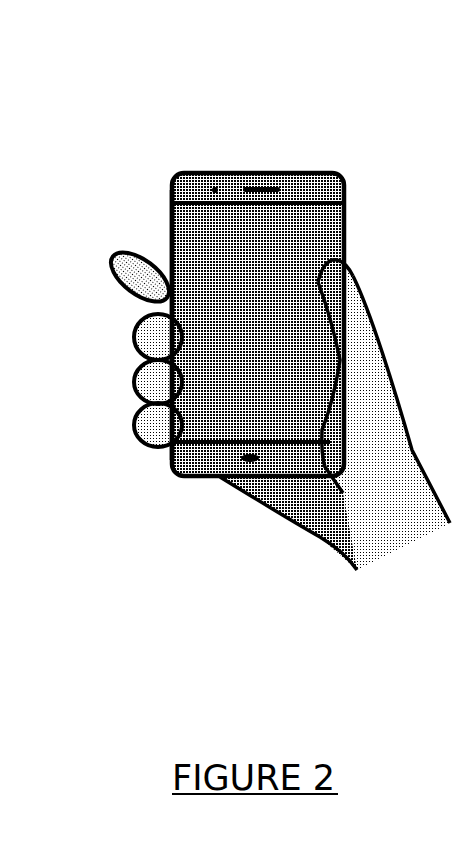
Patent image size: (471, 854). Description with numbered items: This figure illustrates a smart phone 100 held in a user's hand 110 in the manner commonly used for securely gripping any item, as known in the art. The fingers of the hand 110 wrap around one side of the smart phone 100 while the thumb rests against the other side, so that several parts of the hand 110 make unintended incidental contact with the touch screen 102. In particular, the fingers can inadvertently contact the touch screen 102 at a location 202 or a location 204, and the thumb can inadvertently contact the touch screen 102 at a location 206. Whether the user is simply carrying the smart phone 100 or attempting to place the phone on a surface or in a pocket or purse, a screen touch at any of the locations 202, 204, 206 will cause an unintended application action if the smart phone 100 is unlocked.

The smart phone 100 is at (284, 274).
The touch screen 102 is at (210, 248).
The user's hand 110 is at (280, 527).
The location 202 is at (187, 337).
The location 204 is at (200, 387).
The location 206 is at (318, 283).